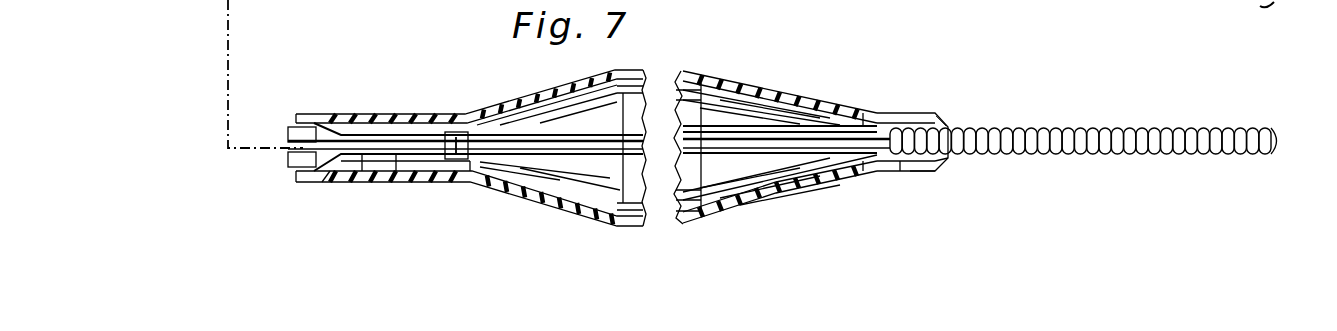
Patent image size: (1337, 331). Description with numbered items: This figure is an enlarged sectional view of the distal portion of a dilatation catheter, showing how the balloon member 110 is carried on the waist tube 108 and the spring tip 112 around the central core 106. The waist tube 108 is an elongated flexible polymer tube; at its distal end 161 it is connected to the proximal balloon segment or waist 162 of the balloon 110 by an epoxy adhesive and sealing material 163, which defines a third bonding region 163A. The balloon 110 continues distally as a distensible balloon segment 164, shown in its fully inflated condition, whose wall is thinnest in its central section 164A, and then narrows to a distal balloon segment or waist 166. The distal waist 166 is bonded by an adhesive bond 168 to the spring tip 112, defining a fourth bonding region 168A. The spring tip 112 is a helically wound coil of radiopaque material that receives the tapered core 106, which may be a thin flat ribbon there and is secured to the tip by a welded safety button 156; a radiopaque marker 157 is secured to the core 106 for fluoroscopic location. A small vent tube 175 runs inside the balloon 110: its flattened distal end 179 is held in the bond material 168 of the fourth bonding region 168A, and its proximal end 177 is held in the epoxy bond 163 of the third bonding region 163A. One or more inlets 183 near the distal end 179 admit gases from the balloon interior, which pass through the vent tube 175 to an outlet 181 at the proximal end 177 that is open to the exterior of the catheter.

The core 106 is at (465, 198).
The waist tube 108 is at (272, 177).
The balloon member 110 is at (775, 115).
The spring tip 112 is at (977, 103).
The welded safety button 156 is at (1263, 103).
The radiopaque marker 157 is at (465, 107).
The distal end of waist tube 161 is at (373, 202).
The proximal balloon segment or waist 162 is at (478, 195).
The adhesive and sealing material 163 is at (469, 220).
The third bonding region 163A is at (278, 220).
The distensible balloon segment 164 is at (780, 214).
The central section 164A is at (599, 169).
The distal balloon segment or waist 166 is at (887, 215).
The adhesive bond 168 is at (978, 180).
The fourth bonding region 168A is at (966, 210).
The vent tube 175 is at (780, 109).
The proximal end of vent tube 177 is at (478, 129).
The distal end of vent tube 179 is at (935, 109).
The outlet 181 is at (461, 89).
The inlet 183 is at (887, 107).